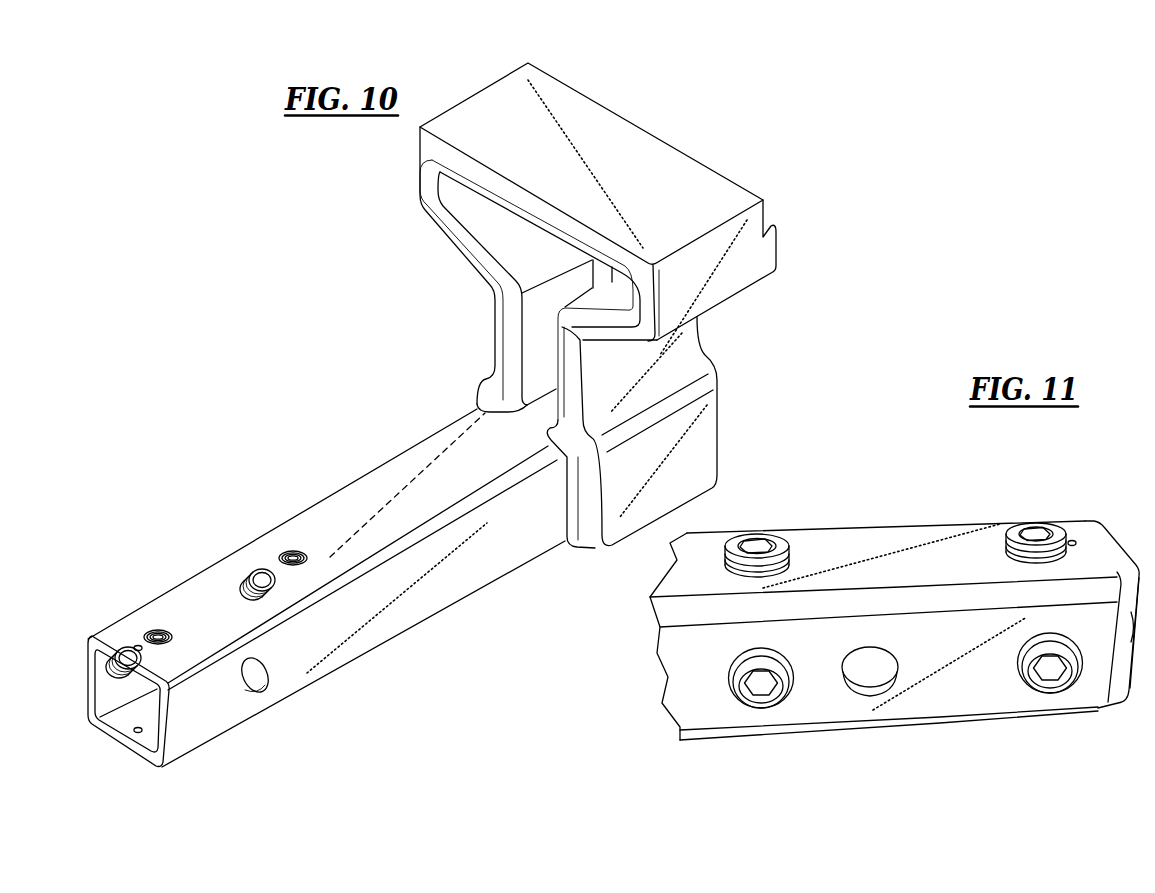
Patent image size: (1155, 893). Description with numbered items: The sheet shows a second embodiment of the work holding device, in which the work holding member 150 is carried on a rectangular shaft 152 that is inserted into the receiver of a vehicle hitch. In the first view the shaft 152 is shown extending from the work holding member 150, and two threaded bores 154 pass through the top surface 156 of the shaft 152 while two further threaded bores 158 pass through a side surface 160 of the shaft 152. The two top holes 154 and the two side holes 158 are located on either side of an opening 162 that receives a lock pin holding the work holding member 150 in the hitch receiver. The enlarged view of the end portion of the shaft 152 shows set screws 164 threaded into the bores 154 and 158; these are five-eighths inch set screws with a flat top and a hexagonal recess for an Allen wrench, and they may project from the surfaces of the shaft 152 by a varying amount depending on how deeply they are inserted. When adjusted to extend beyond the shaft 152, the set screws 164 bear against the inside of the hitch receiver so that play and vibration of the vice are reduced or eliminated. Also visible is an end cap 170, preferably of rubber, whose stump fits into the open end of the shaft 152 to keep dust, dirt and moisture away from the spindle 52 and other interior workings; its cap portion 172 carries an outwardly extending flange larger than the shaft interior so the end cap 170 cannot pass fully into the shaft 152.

In FIG. 11, the spindle 52 is at (705, 574).
In FIG. 10, the work holding member 150 is at (648, 130).
In FIG. 10, the shaft 152 is at (410, 450).
In FIG. 10, the threaded bores 154 is at (297, 558).
In FIG. 10, the top surface 156 is at (467, 477).
In FIG. 11, the top surface 156 is at (957, 547).
In FIG. 10, the threaded bores 158 is at (250, 572).
In FIG. 10, the side surface 160 is at (85, 687).
In FIG. 11, the side surface 160 is at (823, 710).
In FIG. 10, the opening 162 is at (262, 683).
In FIG. 11, the opening 162 is at (870, 692).
In FIG. 11, the set screws 164 is at (760, 538).
In FIG. 11, the end cap 170 is at (1130, 550).
In FIG. 11, the cap portion 172 is at (1115, 668).